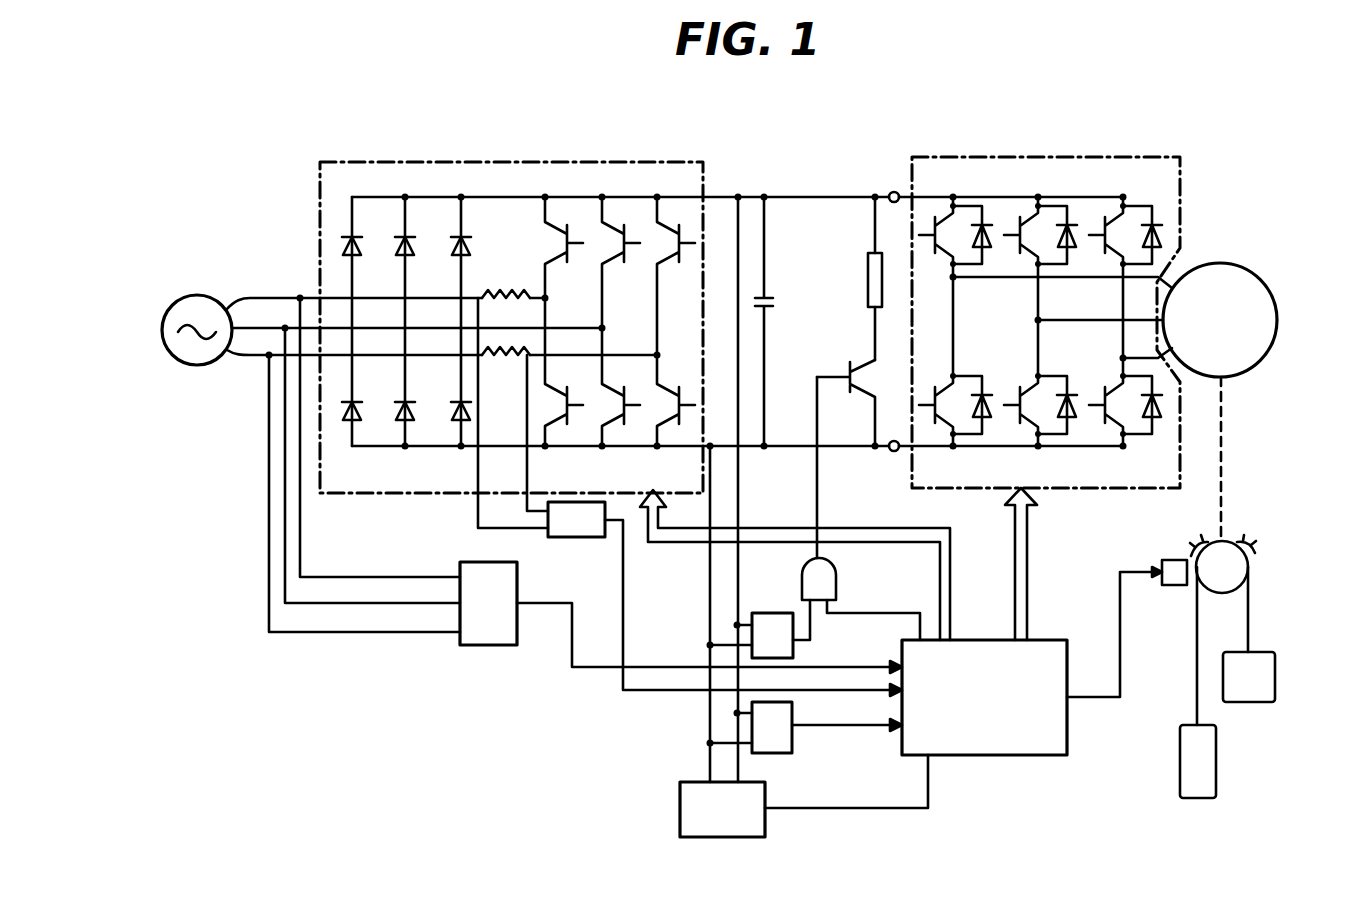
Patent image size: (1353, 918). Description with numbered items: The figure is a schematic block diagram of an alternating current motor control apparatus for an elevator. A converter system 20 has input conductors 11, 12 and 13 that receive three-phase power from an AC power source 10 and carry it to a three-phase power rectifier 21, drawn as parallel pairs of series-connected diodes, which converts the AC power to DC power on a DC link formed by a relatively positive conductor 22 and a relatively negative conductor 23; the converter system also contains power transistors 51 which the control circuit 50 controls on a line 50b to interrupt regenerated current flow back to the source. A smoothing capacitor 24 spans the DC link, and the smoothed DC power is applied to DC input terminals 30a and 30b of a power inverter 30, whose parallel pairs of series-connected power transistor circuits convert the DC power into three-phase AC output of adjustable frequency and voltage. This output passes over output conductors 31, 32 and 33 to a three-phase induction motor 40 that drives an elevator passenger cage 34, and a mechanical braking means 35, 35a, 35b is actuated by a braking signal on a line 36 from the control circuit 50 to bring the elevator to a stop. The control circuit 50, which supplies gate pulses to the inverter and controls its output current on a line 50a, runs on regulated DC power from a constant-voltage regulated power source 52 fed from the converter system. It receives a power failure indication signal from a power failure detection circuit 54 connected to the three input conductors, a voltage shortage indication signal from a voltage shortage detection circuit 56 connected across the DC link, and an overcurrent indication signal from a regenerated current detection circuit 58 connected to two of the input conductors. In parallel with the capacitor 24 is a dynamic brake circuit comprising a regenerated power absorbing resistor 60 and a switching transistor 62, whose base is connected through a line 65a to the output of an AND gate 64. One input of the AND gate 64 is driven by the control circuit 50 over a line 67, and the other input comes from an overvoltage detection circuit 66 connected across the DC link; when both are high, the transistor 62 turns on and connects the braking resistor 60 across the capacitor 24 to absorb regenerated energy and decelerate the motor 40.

The three-phase AC power source 10 is at (197, 295).
The input conductor 11 is at (280, 297).
The input conductor 12 is at (252, 298).
The input conductor 13 is at (250, 356).
The converter system 20 is at (578, 162).
The three-phase power rectifier 21 is at (434, 184).
The positive conductor 22 is at (497, 199).
The negative conductor 23 is at (500, 447).
The smoothing capacitor 24 is at (774, 302).
The power inverter 30 is at (990, 157).
The DC input terminal 30a is at (891, 193).
The DC input terminal 30b is at (893, 452).
The output conductor 31 is at (981, 283).
The output conductor 32 is at (1103, 319).
The output conductor 33 is at (1130, 357).
The elevator passenger cage 34 is at (1276, 675).
The mechanical braking means 35 is at (1176, 585).
The mechanical braking means 35a is at (1200, 545).
The mechanical braking means 35b is at (1249, 545).
The line 36 is at (1103, 697).
The three-phase induction motor 40 is at (1218, 263).
The control circuit 50 is at (1015, 755).
The line 50a is at (1028, 546).
The line 50b is at (925, 529).
The regenerative transistor 51 is at (623, 190).
The constant-voltage regulated power source 52 is at (680, 804).
The power failure detection circuit 54 is at (492, 645).
The voltage shortage detection circuit 56 is at (796, 745).
The regenerated current detection circuit 58 is at (575, 538).
The regenerated power absorbing resistor 60 is at (866, 278).
The switching transistor 62 is at (850, 369).
The AND gate 64 is at (838, 583).
The line 65a is at (786, 467).
The overvoltage detection circuit 66 is at (765, 613).
The line 67 is at (868, 613).